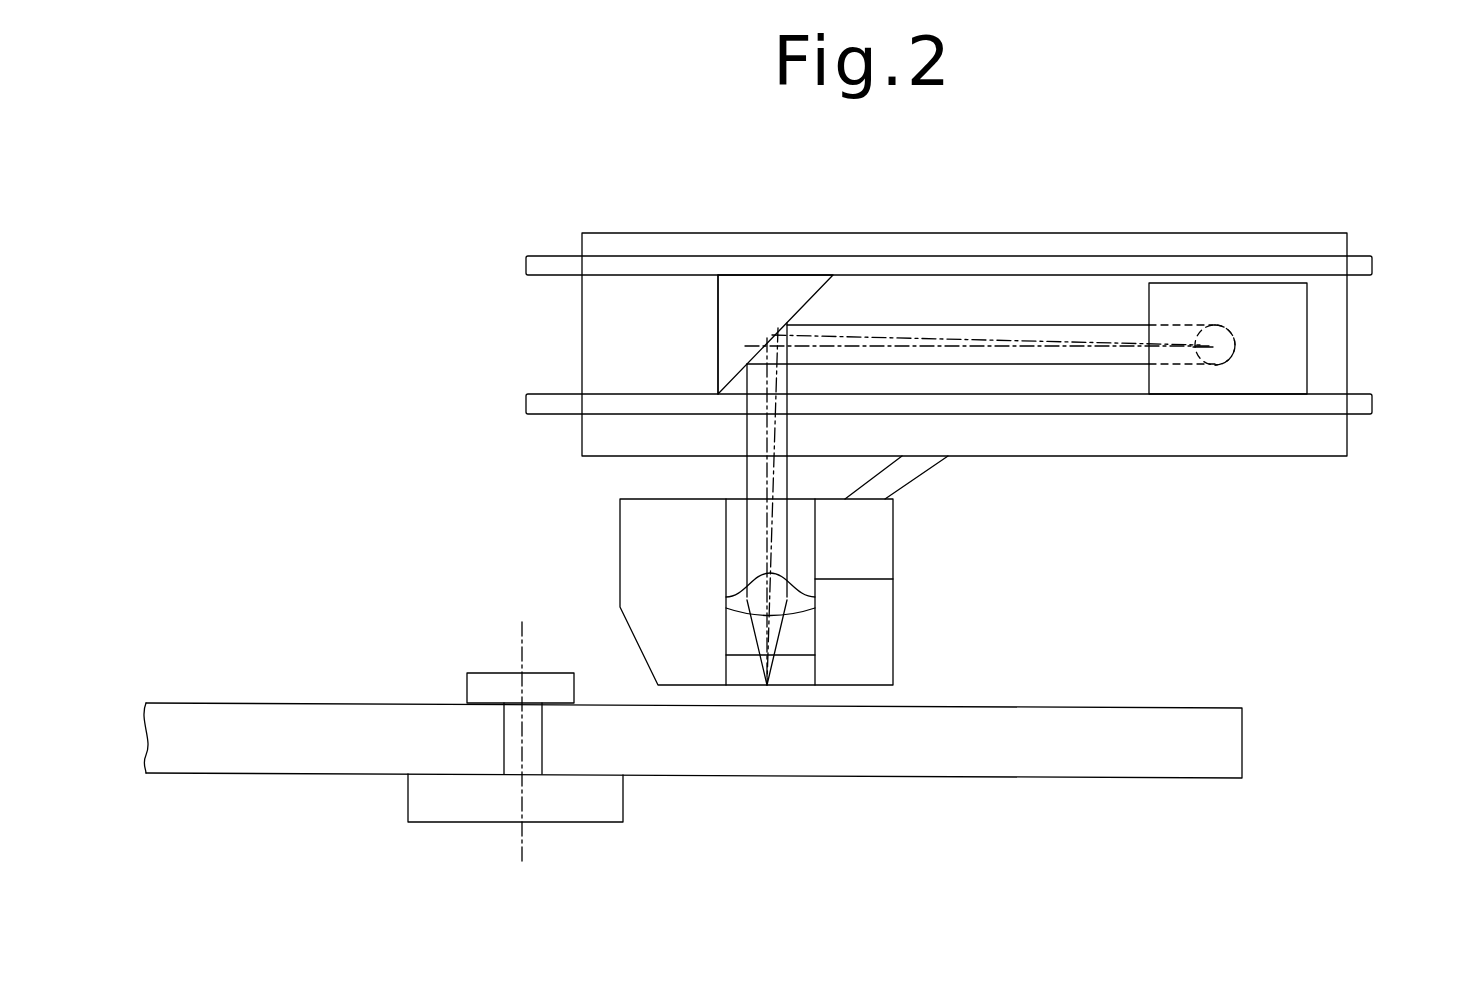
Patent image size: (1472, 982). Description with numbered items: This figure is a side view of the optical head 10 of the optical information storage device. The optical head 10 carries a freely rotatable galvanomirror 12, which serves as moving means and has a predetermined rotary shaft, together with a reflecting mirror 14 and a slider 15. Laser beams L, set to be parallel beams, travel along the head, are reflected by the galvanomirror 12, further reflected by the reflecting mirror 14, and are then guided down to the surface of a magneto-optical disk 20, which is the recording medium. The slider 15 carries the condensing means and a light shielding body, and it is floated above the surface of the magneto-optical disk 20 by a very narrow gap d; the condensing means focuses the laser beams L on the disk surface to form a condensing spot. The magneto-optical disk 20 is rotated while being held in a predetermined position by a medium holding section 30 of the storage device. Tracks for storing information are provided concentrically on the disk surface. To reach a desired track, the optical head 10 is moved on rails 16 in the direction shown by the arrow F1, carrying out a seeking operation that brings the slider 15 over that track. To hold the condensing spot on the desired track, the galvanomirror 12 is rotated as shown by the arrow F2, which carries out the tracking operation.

The optical head 10 is at (1220, 548).
The galvanomirror 12 is at (1278, 302).
The reflecting mirror 14 is at (765, 290).
The slider 15 is at (633, 542).
The rails 16 is at (535, 400).
The magneto-optical disk 20 is at (1215, 750).
The medium holding section 30 is at (598, 815).
The laser beams L is at (1070, 365).
The arrow indicating optical head movement F1 is at (833, 297).
The arrow indicating galvanomirror rotation F2 is at (1266, 315).
The gap d is at (679, 647).